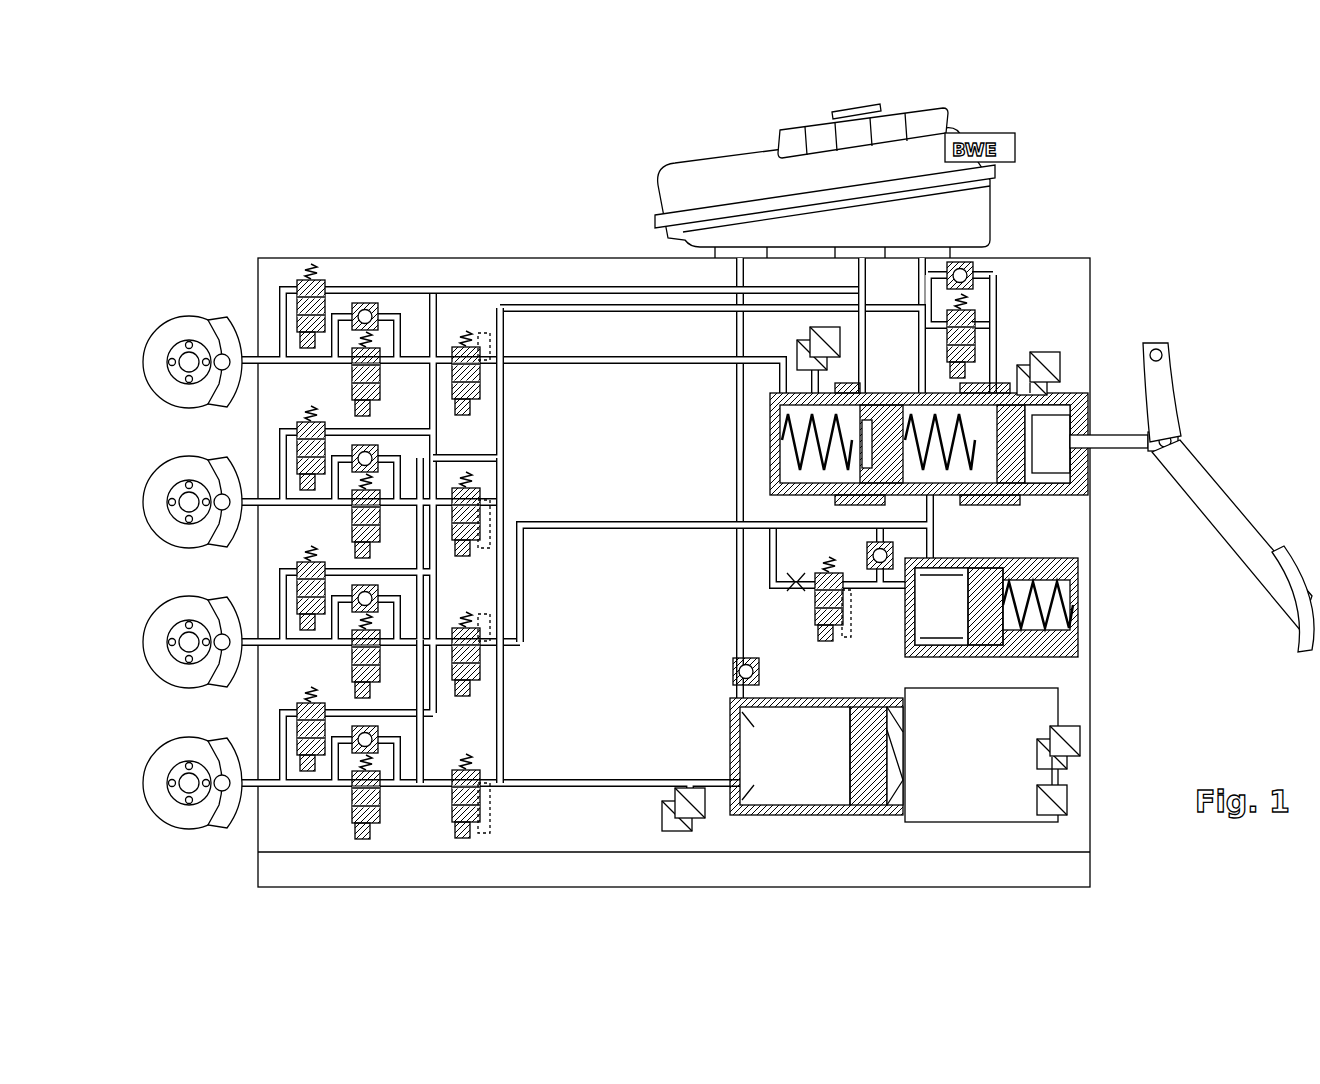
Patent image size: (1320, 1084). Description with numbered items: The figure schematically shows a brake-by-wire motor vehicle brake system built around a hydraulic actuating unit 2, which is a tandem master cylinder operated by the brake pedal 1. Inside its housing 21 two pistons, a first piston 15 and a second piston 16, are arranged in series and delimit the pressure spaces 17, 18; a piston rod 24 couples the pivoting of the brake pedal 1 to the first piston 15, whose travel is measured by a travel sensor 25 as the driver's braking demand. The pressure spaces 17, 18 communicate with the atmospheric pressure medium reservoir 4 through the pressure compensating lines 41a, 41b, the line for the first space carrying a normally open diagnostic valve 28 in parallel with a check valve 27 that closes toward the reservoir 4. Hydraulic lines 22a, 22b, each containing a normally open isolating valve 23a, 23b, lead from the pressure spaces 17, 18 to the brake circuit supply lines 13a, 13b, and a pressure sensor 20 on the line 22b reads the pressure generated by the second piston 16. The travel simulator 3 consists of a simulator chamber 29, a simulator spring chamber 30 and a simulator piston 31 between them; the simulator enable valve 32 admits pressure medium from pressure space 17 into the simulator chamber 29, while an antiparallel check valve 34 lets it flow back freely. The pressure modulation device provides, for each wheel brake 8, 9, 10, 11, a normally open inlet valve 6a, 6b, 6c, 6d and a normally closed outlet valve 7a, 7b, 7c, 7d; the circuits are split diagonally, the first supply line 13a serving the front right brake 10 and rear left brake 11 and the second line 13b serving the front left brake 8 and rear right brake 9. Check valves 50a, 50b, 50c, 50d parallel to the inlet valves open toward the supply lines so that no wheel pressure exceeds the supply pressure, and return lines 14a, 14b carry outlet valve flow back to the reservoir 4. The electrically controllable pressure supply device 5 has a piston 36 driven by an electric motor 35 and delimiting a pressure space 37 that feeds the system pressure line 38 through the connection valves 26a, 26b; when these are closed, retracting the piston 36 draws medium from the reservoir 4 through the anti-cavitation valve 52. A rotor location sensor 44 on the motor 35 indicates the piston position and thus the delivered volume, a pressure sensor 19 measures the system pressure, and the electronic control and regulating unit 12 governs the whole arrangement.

The brake pedal 1 is at (1202, 480).
The hydraulic actuating unit 2 is at (911, 437).
The travel simulator 3 is at (991, 597).
The pressure medium reservoir 4 is at (672, 180).
The electrically controllable pressure supply device 5 is at (1033, 730).
The inlet valve 6a is at (380, 385).
The inlet valve 6b is at (380, 525).
The inlet valve 6c is at (380, 668).
The inlet valve 6d is at (380, 808).
The outlet valve 7a is at (298, 284).
The outlet valve 7b is at (298, 426).
The outlet valve 7c is at (298, 566).
The outlet valve 7d is at (298, 707).
The wheel brake 8 is at (226, 332).
The wheel brake 9 is at (226, 472).
The wheel brake 10 is at (226, 612).
The wheel brake 11 is at (226, 752).
The electronic control and regulating unit 12 is at (1088, 868).
The brake circuit supply line 13a is at (424, 742).
The brake circuit supply line 13b is at (440, 457).
The return line 14a is at (608, 312).
The return line 14b is at (556, 288).
The first piston 15 is at (1072, 495).
The second piston 16 is at (880, 404).
The pressure space 17 is at (938, 418).
The pressure space 18 is at (820, 470).
The pressure sensor 19 is at (672, 802).
The pressure sensor 20 is at (820, 330).
The housing 21 is at (1072, 258).
The hydraulic line 22a is at (612, 530).
The hydraulic line 22b is at (612, 366).
The isolating valve 23a is at (480, 660).
The isolating valve 23b is at (480, 380).
The piston rod 24 is at (1118, 434).
The travel sensor 25 is at (1062, 360).
The connection valve 26a is at (480, 778).
The connection valve 26b is at (480, 495).
The check valve 27 is at (975, 275).
The diagnostic valve 28 is at (946, 332).
The simulator chamber 29 is at (907, 630).
The simulator spring chamber 30 is at (1030, 578).
The simulator piston 31 is at (943, 620).
The simulator enable valve 32 is at (843, 592).
The check valve 34 is at (866, 555).
The electric motor 35 is at (1058, 712).
The piston 36 is at (852, 790).
The pressure space 37 is at (816, 749).
The system pressure line 38 is at (506, 712).
The pressure compensating line 41a is at (995, 350).
The pressure compensating line 41b is at (858, 272).
The sensor 44 is at (1082, 742).
The check valve 50a is at (363, 302).
The check valve 50b is at (358, 444).
The check valve 50c is at (358, 584).
The check valve 50d is at (358, 725).
The anti-cavitation valve 52 is at (732, 670).